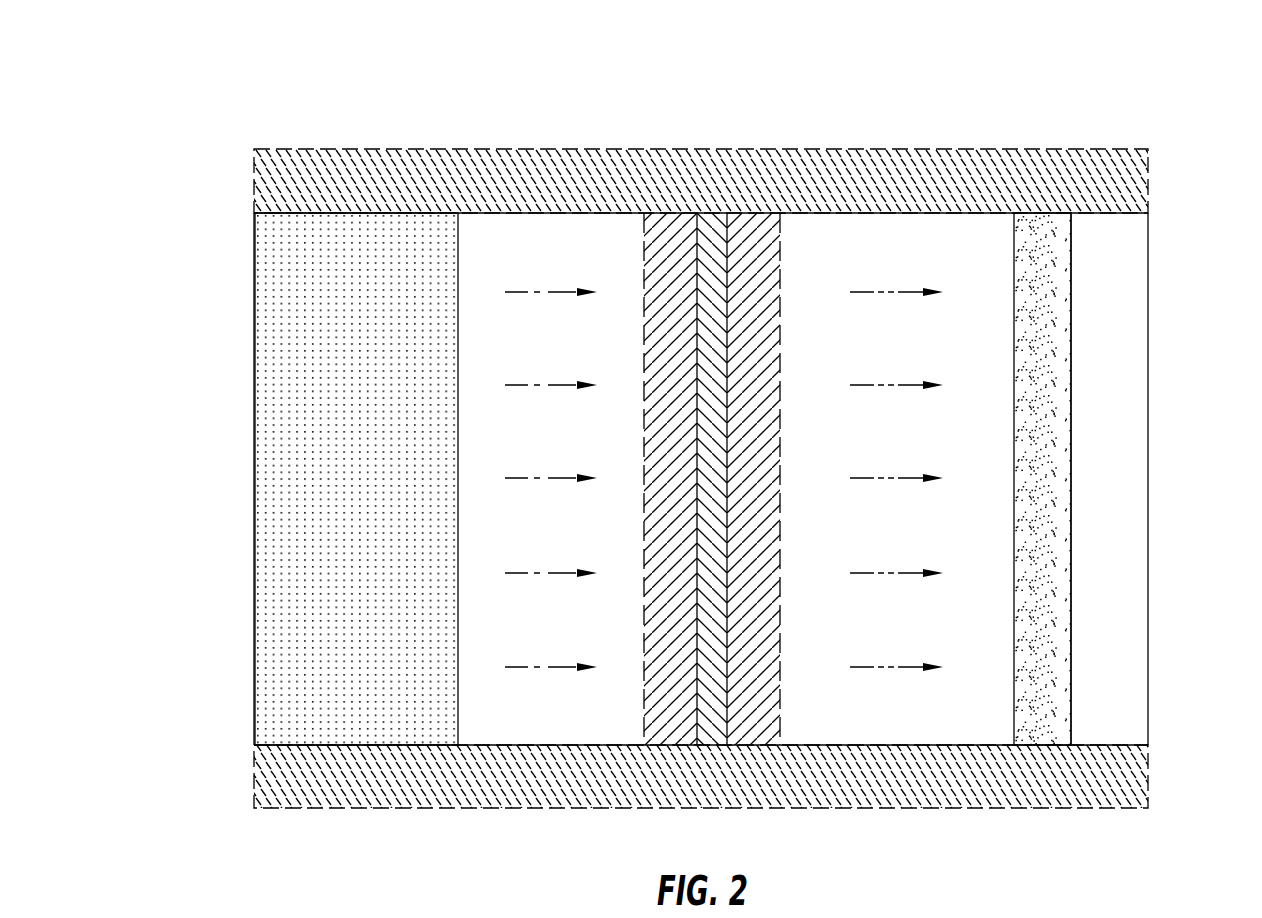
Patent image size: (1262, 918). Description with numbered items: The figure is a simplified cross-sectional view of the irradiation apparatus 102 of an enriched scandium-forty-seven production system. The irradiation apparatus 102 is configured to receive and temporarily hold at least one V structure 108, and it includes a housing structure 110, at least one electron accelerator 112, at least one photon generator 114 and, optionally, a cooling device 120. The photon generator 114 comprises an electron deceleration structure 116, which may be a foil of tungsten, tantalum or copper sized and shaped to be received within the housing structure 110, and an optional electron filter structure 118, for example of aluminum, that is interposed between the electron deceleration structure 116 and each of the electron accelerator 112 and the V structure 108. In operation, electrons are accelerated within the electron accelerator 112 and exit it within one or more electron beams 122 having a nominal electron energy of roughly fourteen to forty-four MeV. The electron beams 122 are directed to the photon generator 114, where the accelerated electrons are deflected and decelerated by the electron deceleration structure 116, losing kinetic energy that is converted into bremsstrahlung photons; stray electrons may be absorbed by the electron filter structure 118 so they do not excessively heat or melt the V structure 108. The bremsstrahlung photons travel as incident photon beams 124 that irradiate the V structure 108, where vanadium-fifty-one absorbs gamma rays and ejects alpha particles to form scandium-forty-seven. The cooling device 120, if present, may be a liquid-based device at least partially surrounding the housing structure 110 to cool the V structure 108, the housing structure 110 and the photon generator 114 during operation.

The irradiation apparatus 102 is at (1076, 59).
The V structure 108 is at (1045, 713).
The housing structure 110 is at (1150, 427).
The electron accelerator 112 is at (272, 443).
The photon generator 114 is at (618, 717).
The electron deceleration structure 116 is at (716, 713).
The electron filter structure 118 is at (760, 713).
The cooling device 120 is at (445, 778).
The electron beam 122 is at (520, 478).
The incident photon beam 124 is at (915, 478).